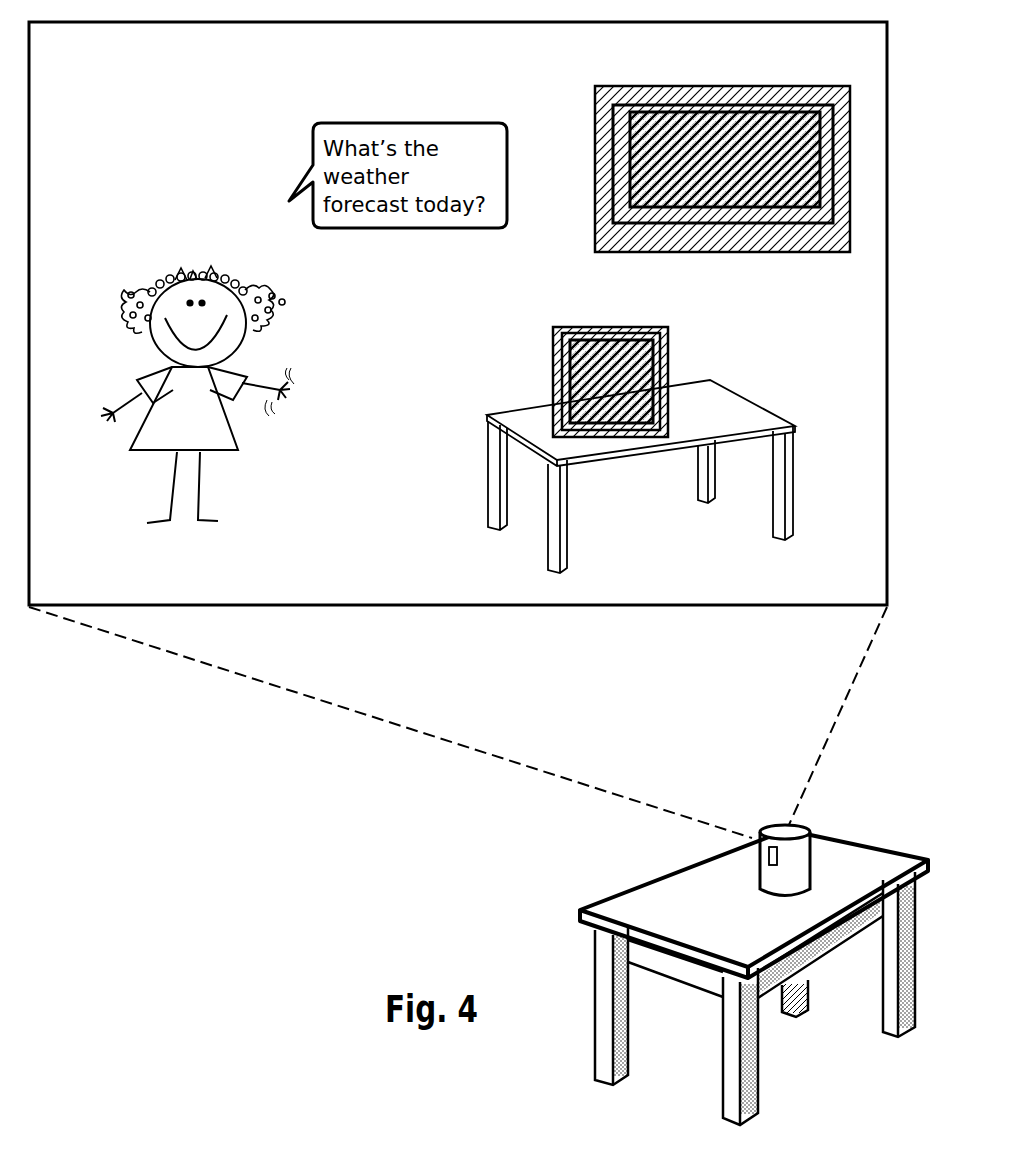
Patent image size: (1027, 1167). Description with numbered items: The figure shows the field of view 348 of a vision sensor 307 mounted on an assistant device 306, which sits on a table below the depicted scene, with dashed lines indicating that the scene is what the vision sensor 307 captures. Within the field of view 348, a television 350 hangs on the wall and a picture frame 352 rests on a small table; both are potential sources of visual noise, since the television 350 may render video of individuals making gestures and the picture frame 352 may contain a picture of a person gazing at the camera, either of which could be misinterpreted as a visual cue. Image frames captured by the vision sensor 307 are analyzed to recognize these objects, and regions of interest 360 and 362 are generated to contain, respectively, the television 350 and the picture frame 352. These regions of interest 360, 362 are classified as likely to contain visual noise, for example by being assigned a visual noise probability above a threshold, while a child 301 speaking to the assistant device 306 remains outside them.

The field of view 348 is at (70, 53).
The user (child) 301 is at (272, 308).
The region of interest 360 is at (595, 132).
The television 350 is at (850, 176).
The region of interest 362 is at (553, 378).
The picture frame 352 is at (668, 365).
The assistant device 306 is at (810, 862).
The vision sensor 307 is at (768, 855).